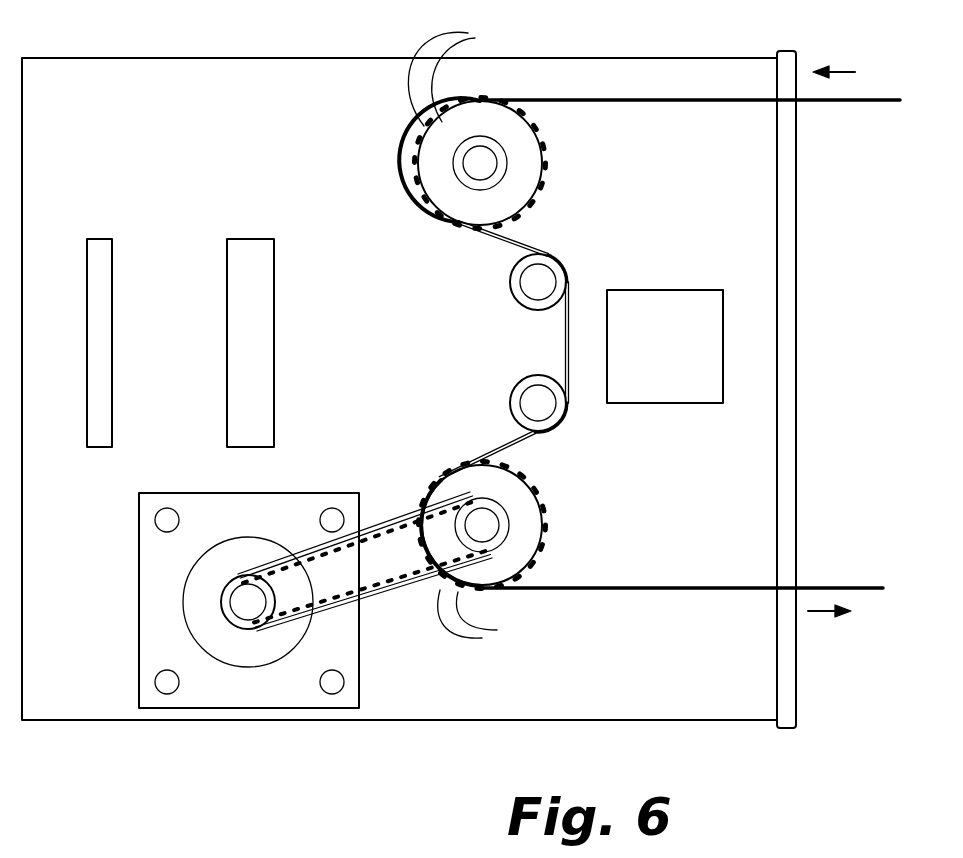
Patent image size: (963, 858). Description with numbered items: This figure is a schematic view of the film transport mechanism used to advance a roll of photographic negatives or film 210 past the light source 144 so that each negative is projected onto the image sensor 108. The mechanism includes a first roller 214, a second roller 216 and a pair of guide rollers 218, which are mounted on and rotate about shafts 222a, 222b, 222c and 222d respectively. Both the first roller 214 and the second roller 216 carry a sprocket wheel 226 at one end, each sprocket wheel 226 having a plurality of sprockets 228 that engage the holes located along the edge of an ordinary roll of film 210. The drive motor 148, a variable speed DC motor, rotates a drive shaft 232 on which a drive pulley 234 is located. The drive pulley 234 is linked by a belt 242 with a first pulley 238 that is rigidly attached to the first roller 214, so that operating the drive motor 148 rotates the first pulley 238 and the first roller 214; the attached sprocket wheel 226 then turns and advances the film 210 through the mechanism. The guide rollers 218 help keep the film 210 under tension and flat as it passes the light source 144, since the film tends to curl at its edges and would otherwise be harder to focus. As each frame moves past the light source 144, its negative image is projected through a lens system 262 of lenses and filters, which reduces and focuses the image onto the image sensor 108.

The image sensor 108 is at (100, 258).
The light source 144 is at (636, 292).
The drive motor 148 is at (276, 710).
The film 210 is at (715, 98).
The first roller 214 is at (518, 506).
The second roller 216 is at (515, 140).
The guide rollers 218 is at (517, 393).
The shaft 222a is at (485, 520).
The shaft 222b is at (480, 163).
The shaft 222c is at (540, 282).
The shaft 222d is at (530, 406).
The sprocket wheel 226 is at (522, 103).
The sprockets 228 is at (510, 632).
The drive shaft 232 is at (247, 602).
The drive pulley 234 is at (235, 590).
The first pulley 238 is at (495, 545).
The belt 242 is at (415, 525).
The lens system 262 is at (265, 258).